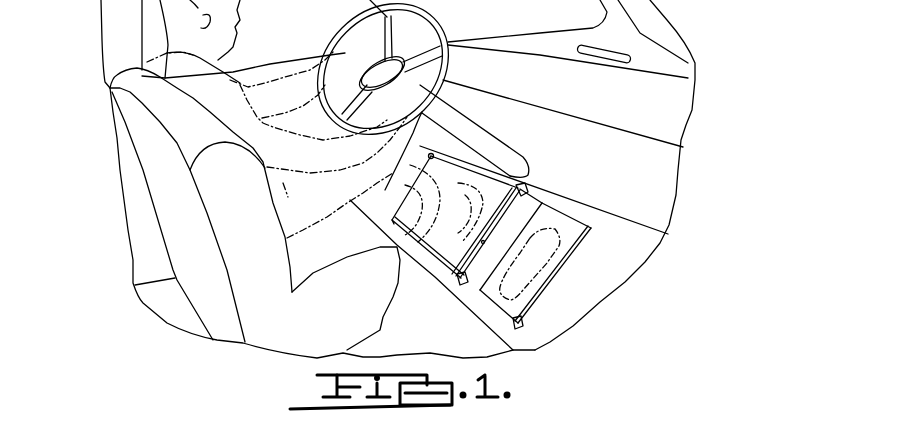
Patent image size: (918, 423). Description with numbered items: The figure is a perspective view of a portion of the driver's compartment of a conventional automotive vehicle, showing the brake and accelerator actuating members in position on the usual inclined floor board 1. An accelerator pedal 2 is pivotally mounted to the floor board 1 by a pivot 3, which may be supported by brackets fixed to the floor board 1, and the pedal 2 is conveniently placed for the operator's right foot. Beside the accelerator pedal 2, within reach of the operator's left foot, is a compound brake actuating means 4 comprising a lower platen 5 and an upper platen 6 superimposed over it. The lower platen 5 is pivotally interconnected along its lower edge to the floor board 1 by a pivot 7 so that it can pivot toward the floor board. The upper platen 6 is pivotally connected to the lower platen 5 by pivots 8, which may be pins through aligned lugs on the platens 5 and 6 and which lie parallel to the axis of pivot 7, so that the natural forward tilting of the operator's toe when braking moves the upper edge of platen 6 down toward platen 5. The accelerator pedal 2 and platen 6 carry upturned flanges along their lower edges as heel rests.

The floor board 1 is at (585, 294).
The accelerator pedal 2 is at (572, 220).
The pivot 3 is at (520, 327).
The compound brake actuating means 4 is at (522, 189).
The lower platen 5 is at (528, 197).
The upper platen 6 is at (470, 173).
The pivot 7 is at (462, 284).
The pivots 8 is at (482, 243).